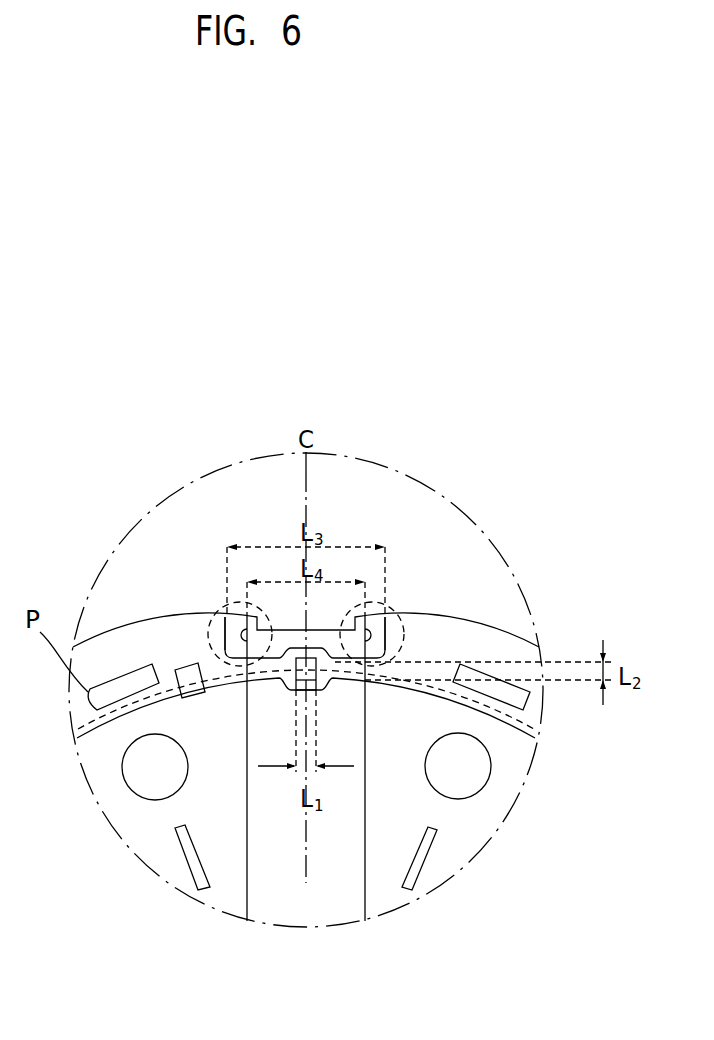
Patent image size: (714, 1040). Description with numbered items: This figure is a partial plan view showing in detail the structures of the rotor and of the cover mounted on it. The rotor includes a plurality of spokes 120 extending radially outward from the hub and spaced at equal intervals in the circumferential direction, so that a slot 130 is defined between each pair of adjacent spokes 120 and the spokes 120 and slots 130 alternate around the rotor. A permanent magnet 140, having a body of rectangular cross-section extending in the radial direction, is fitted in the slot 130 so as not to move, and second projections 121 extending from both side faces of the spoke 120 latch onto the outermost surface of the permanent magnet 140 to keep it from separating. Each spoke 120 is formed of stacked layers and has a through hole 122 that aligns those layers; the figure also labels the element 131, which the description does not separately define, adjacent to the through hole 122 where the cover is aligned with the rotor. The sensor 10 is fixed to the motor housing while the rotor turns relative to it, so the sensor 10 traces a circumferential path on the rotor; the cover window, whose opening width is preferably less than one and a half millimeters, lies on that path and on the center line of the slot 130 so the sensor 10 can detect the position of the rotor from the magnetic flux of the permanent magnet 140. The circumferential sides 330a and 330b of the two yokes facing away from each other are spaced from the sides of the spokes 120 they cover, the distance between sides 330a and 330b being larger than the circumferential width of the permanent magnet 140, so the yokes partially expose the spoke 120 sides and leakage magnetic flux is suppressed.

The sensor 10 is at (190, 665).
The spoke 120 is at (470, 835).
The second projection 121 is at (244, 628).
The through hole 122 is at (480, 773).
The slot 130 is at (363, 890).
The slot 131 is at (475, 672).
The permanent magnet 140 is at (321, 882).
The side of yoke 330a is at (392, 634).
The side of yoke 330b is at (228, 632).